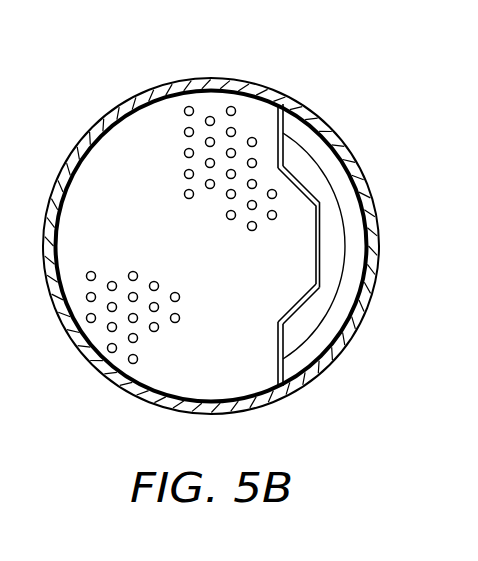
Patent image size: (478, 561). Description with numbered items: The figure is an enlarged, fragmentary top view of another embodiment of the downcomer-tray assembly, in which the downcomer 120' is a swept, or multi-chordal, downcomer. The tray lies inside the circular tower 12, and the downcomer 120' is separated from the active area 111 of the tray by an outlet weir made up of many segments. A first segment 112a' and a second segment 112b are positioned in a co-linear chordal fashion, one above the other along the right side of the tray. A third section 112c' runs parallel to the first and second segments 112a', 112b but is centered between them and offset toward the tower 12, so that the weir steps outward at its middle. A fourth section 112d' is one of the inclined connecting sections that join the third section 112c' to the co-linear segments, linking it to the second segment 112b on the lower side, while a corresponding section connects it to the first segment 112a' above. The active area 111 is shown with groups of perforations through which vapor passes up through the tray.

The tower 12 is at (156, 92).
The active area 111 is at (162, 230).
The first segment 112a' is at (343, 131).
The second segment 112b is at (281, 361).
The third section 112c' is at (327, 213).
The fourth section 112d' is at (262, 300).
The swept downcomer 120' is at (370, 246).